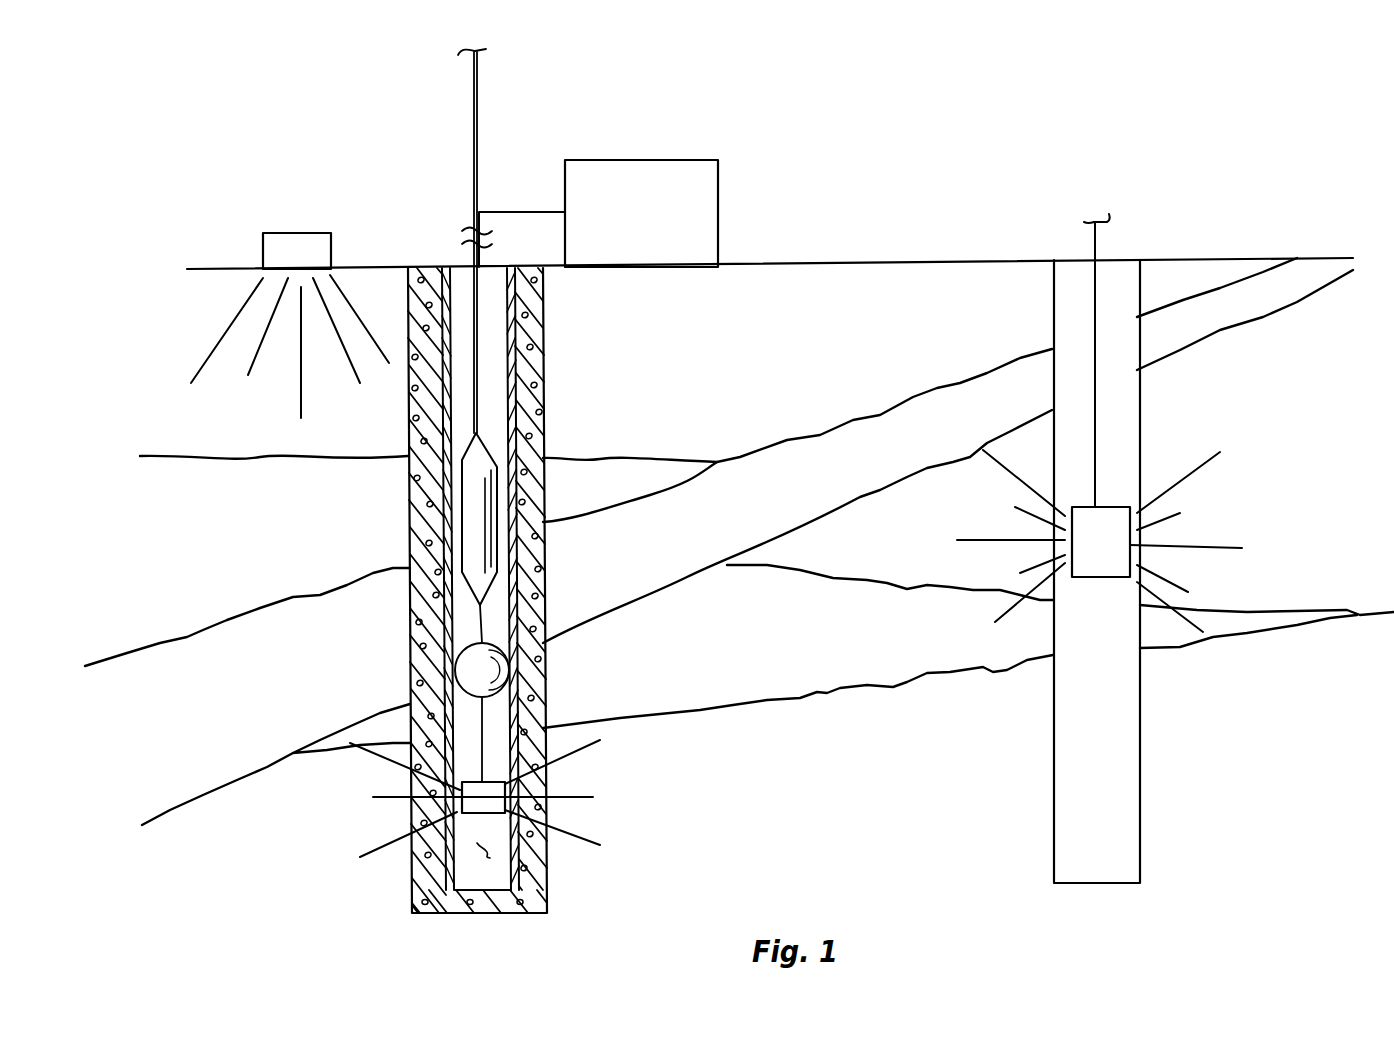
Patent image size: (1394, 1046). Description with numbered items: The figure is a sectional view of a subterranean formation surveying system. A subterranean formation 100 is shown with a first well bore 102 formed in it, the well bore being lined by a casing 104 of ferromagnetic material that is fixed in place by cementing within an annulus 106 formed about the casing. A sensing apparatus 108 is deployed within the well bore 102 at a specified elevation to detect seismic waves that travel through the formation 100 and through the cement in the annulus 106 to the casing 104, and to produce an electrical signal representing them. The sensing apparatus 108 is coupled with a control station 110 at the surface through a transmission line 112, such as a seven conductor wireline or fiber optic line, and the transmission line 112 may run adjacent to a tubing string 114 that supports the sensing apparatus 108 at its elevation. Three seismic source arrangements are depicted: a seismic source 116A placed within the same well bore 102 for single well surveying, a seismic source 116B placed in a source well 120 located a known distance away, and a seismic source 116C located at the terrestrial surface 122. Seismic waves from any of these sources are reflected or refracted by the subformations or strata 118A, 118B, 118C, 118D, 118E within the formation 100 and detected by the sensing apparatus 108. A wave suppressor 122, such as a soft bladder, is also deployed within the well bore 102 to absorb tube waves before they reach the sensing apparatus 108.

The subterranean formation 100 is at (875, 300).
The first well bore 102 is at (505, 850).
The casing 104 is at (450, 295).
The annulus 106 is at (544, 318).
The sensing apparatus 108 is at (462, 497).
The control station 110 is at (608, 160).
The transmission line 112 is at (482, 253).
The tubing string 114 is at (474, 147).
The seismic source 116A is at (498, 780).
The seismic source 116B is at (1116, 507).
The seismic source 116C is at (293, 233).
The subformation or stratum 118A is at (835, 386).
The subformation or stratum 118B is at (251, 567).
The subformation or stratum 118C is at (660, 562).
The subformation or stratum 118D is at (797, 649).
The subformation or stratum 118E is at (795, 822).
The source well 120 is at (1102, 762).
The wave suppressor 122 is at (457, 664).